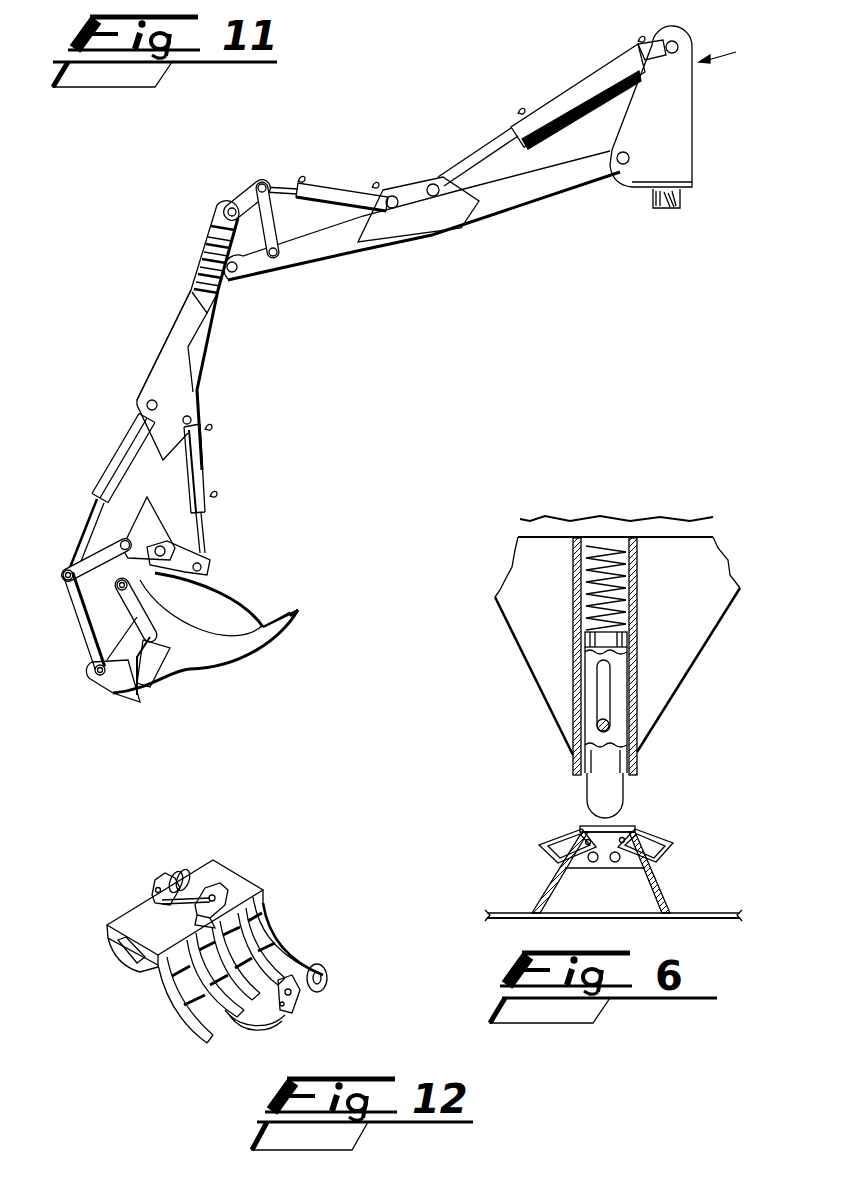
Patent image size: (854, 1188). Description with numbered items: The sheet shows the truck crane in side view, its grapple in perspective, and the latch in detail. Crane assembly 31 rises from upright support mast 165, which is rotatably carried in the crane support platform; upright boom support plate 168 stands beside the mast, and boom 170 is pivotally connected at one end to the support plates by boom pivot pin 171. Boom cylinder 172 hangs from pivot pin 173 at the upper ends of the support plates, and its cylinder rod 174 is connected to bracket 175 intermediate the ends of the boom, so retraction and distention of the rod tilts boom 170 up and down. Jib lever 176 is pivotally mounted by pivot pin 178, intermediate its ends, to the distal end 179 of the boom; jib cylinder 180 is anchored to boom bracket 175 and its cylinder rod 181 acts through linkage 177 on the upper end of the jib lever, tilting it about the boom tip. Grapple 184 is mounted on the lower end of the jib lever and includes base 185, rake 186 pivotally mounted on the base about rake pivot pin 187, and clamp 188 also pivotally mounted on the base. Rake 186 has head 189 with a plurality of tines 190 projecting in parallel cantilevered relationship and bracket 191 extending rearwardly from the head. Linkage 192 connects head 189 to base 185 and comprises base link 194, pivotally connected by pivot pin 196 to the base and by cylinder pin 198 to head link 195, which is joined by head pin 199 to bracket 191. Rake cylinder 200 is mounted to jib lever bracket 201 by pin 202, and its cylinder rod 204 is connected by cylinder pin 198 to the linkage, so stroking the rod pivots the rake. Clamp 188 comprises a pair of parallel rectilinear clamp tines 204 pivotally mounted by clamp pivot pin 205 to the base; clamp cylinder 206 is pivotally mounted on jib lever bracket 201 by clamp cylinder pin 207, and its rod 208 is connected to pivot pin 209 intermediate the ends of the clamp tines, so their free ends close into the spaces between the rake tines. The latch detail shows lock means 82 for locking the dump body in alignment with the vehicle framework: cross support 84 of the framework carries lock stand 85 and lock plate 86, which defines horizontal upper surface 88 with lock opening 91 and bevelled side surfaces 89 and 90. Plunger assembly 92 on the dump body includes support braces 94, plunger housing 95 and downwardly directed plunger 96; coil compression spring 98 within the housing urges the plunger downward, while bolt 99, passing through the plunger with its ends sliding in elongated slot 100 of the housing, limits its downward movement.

In FIG. 11, the crane assembly 31 is at (730, 52).
In FIG. 11, the support mast 165 is at (654, 207).
In FIG. 11, the boom support plate 168 is at (682, 139).
In FIG. 11, the boom 170 is at (345, 255).
In FIG. 11, the boom pivot pin 171 is at (621, 170).
In FIG. 11, the boom cylinder 172 is at (601, 86).
In FIG. 11, the pivot pin 173 is at (679, 39).
In FIG. 11, the cylinder rod 174 is at (486, 156).
In FIG. 11, the bracket 175 is at (407, 195).
In FIG. 11, the jib lever 176 is at (200, 337).
In FIG. 11, the linkage 177 is at (246, 198).
In FIG. 11, the pivot pin 178 is at (238, 276).
In FIG. 11, the distal end 179 is at (198, 258).
In FIG. 11, the jib cylinder 180 is at (347, 193).
In FIG. 11, the cylinder rod 181 is at (290, 188).
In FIG. 11, the grapple 184 is at (104, 752).
In FIG. 12, the grapple 184 is at (280, 866).
In FIG. 11, the base 185 is at (137, 522).
In FIG. 11, the rake 186 is at (227, 650).
In FIG. 12, the rake 186 is at (160, 1003).
In FIG. 11, the rake pivot pin 187 is at (90, 656).
In FIG. 12, the rake pivot pin 187 is at (212, 892).
In FIG. 11, the clamp 188 is at (255, 615).
In FIG. 12, the clamp 188 is at (246, 1022).
In FIG. 11, the head 189 is at (187, 657).
In FIG. 12, the head 189 is at (140, 973).
In FIG. 11, the tines 190 is at (267, 637).
In FIG. 12, the tines 190 is at (196, 1042).
In FIG. 11, the bracket 191 is at (114, 682).
In FIG. 12, the bracket 191 is at (152, 892).
In FIG. 11, the linkage 192 is at (93, 676).
In FIG. 11, the base link 194 is at (64, 567).
In FIG. 11, the head link 195 is at (72, 604).
In FIG. 11, the pivot pin 196 is at (120, 540).
In FIG. 11, the cylinder pin 198 is at (72, 586).
In FIG. 11, the head pin 199 is at (99, 685).
In FIG. 12, the head pin 199 is at (168, 876).
In FIG. 11, the rake cylinder 200 is at (118, 465).
In FIG. 11, the jib lever bracket 201 is at (167, 387).
In FIG. 11, the pin 202 is at (146, 398).
In FIG. 11, the cylinder rod 204 is at (76, 550).
In FIG. 12, the cylinder rod 204 is at (277, 1020).
In FIG. 11, the clamp pivot pin 205 is at (203, 534).
In FIG. 12, the clamp pivot pin 205 is at (322, 966).
In FIG. 11, the clamp cylinder 206 is at (192, 457).
In FIG. 11, the clamp cylinder pin 207 is at (195, 418).
In FIG. 11, the rod 208 is at (212, 522).
In FIG. 11, the pivot pin 209 is at (213, 558).
In FIG. 12, the pivot pin 209 is at (300, 1005).
In FIG. 6, the lock means 82 is at (518, 856).
In FIG. 6, the cross support 84 is at (718, 911).
In FIG. 6, the lock stand 85 is at (666, 893).
In FIG. 6, the lock plate 86 is at (555, 833).
In FIG. 6, the horizontal upper surface 88 is at (577, 827).
In FIG. 6, the bevelled side surface 89 is at (670, 843).
In FIG. 6, the bevelled side surface 90 is at (543, 845).
In FIG. 6, the lock opening 91 is at (622, 826).
In FIG. 6, the plunger assembly 92 is at (565, 700).
In FIG. 6, the support braces 94 is at (532, 645).
In FIG. 6, the plunger housing 95 is at (636, 590).
In FIG. 6, the plunger 96 is at (627, 642).
In FIG. 6, the coil compression spring 98 is at (621, 540).
In FIG. 6, the bolt 99 is at (625, 741).
In FIG. 6, the elongated slot 100 is at (606, 680).